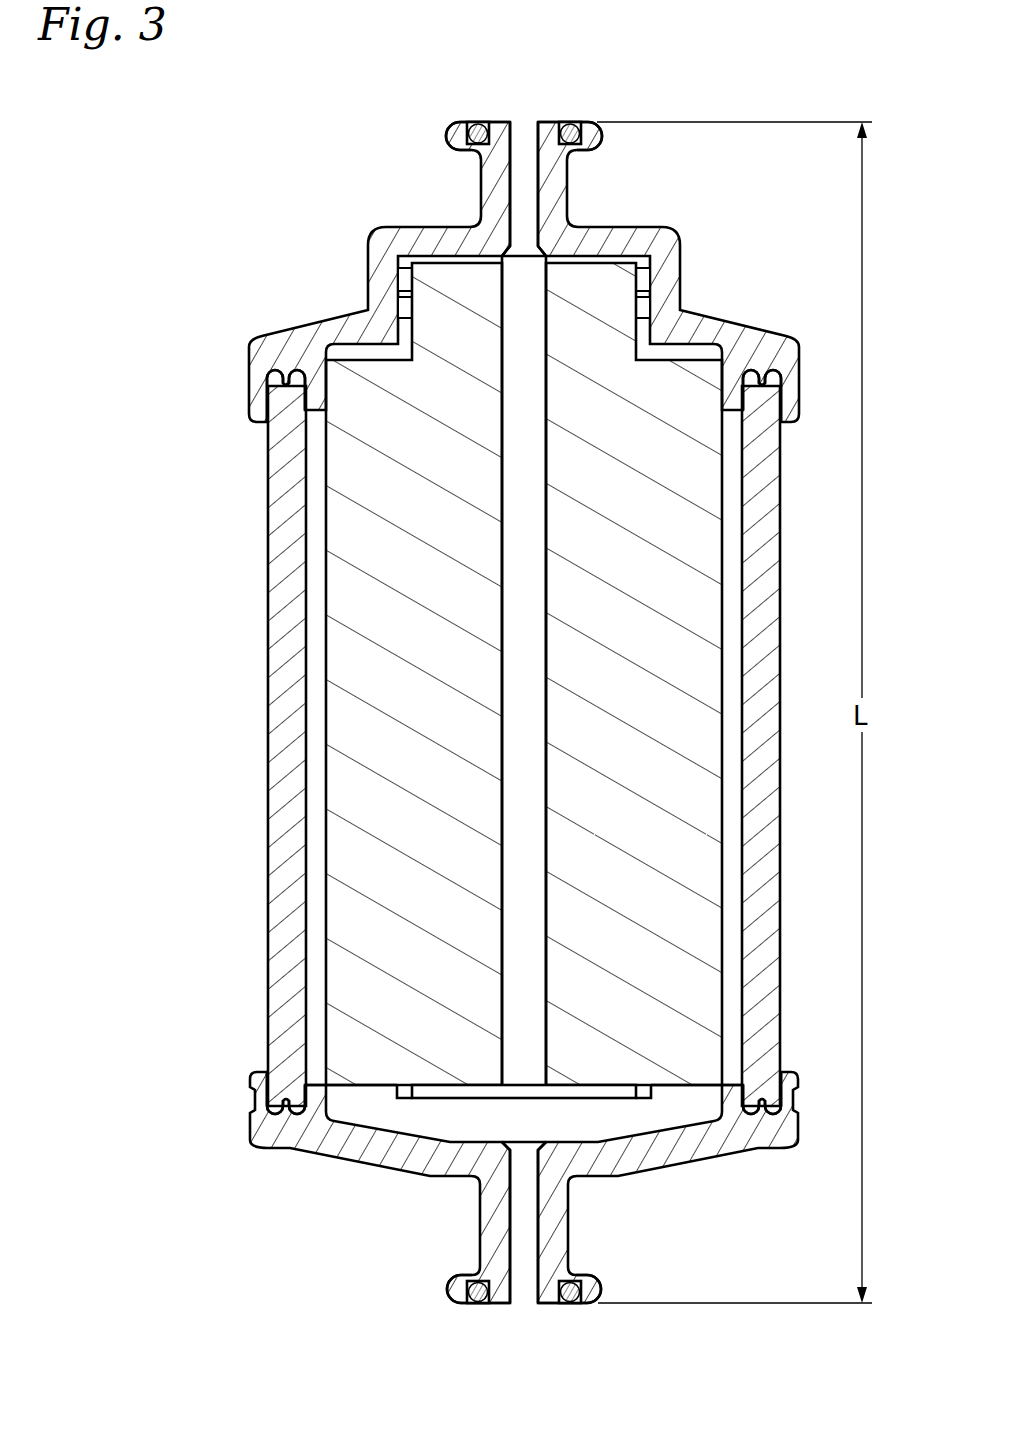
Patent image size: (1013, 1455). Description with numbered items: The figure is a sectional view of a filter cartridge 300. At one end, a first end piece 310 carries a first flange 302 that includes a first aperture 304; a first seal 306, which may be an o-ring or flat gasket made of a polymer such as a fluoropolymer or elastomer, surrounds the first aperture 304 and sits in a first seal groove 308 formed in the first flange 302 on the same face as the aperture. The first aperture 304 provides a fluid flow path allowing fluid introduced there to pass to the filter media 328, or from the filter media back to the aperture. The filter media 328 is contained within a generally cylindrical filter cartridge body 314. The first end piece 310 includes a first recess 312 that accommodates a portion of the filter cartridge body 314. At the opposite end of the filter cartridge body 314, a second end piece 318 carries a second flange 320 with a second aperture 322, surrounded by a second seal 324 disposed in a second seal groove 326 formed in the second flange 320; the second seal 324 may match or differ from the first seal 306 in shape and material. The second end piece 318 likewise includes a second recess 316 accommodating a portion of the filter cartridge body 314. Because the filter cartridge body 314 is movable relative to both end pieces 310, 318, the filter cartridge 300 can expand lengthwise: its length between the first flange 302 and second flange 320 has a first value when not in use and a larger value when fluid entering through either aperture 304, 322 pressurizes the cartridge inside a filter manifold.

The filter cartridge 300 is at (722, 80).
The first flange 302 is at (447, 1300).
The first aperture 304 is at (525, 1293).
The first seal 306 is at (562, 1303).
The first seal groove 308 is at (570, 1302).
The first end piece 310 is at (333, 1160).
The first recess 312 is at (267, 1070).
The filter cartridge body 314 is at (268, 895).
The second recess 316 is at (265, 428).
The second end piece 318 is at (323, 322).
The second flange 320 is at (450, 147).
The second aperture 322 is at (525, 133).
The second seal 324 is at (563, 130).
The second seal groove 326 is at (568, 122).
The filter media 328 is at (342, 597).